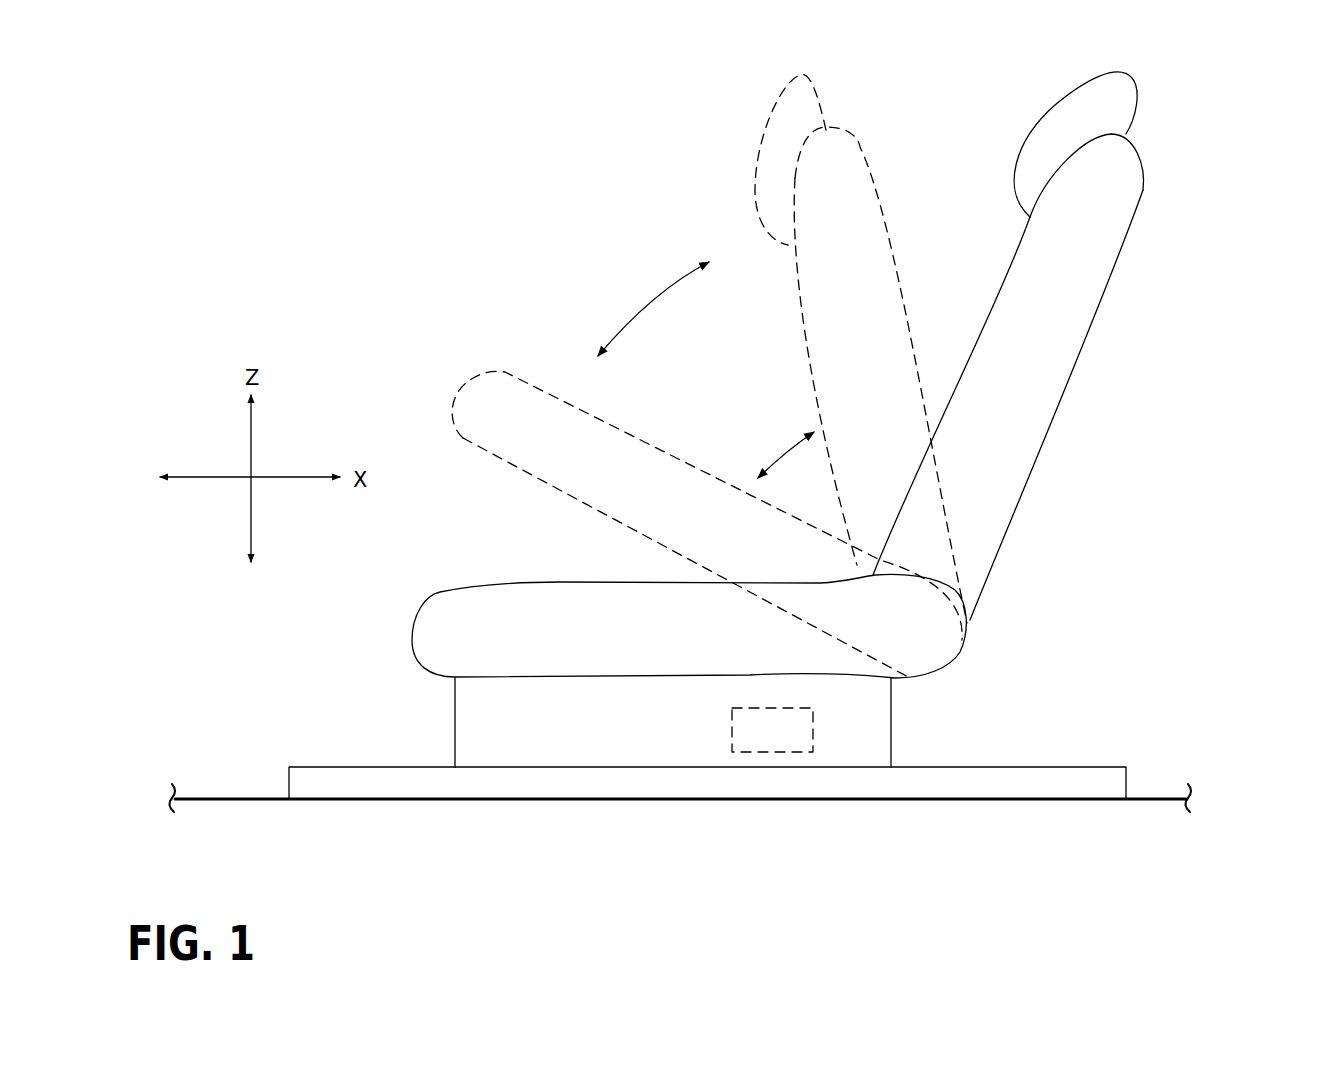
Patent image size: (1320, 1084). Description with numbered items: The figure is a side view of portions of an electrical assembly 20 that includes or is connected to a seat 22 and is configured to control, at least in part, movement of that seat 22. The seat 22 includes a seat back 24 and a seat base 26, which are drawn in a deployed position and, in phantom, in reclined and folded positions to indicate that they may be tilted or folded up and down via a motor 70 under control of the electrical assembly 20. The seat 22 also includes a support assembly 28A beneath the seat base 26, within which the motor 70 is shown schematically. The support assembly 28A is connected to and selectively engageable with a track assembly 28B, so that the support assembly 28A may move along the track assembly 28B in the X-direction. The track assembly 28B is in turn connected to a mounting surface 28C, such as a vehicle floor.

The electrical assembly 20 is at (620, 166).
The seat 22 is at (1063, 547).
The seat back 24 is at (1047, 313).
The seat base 26 is at (460, 625).
The support assembly 28A is at (857, 715).
The track assembly 28B is at (1043, 770).
The mounting surface 28C is at (1148, 797).
The motor 70 is at (760, 753).